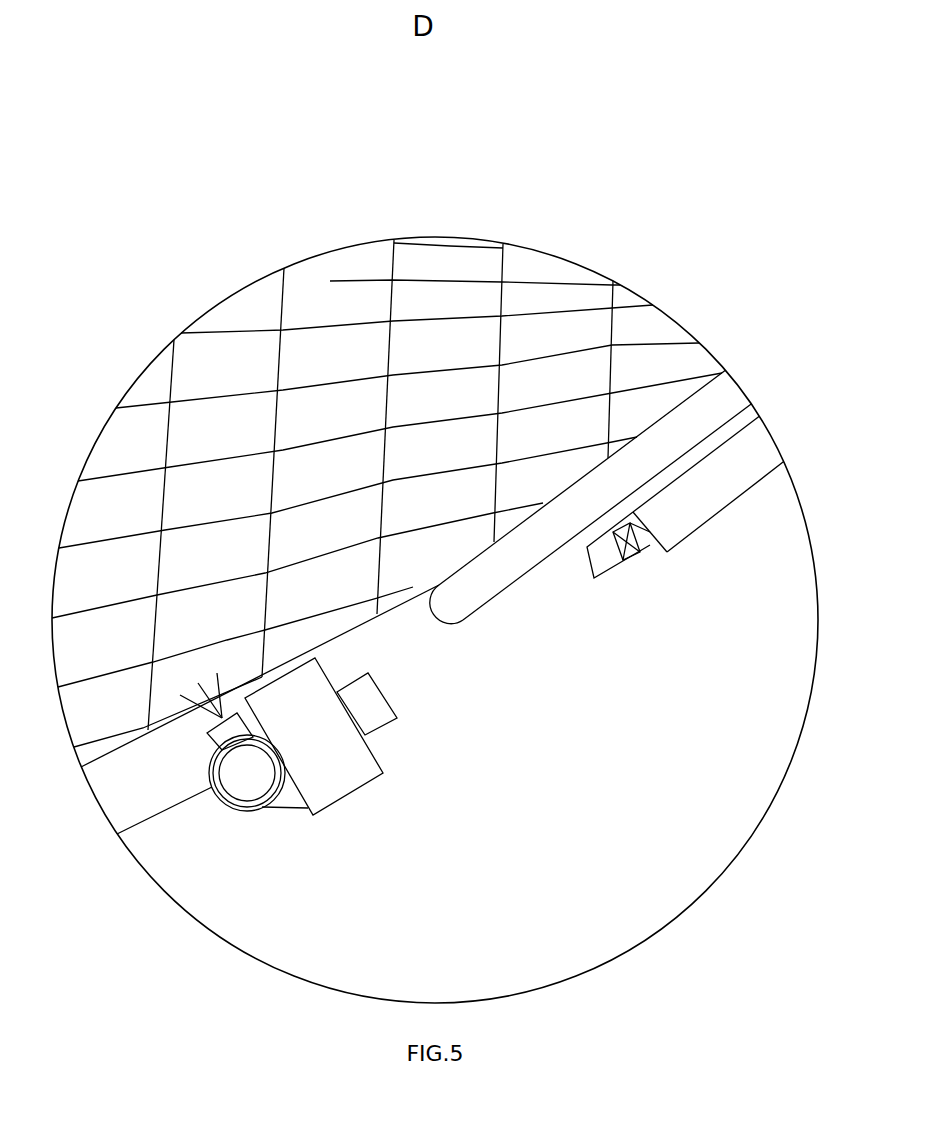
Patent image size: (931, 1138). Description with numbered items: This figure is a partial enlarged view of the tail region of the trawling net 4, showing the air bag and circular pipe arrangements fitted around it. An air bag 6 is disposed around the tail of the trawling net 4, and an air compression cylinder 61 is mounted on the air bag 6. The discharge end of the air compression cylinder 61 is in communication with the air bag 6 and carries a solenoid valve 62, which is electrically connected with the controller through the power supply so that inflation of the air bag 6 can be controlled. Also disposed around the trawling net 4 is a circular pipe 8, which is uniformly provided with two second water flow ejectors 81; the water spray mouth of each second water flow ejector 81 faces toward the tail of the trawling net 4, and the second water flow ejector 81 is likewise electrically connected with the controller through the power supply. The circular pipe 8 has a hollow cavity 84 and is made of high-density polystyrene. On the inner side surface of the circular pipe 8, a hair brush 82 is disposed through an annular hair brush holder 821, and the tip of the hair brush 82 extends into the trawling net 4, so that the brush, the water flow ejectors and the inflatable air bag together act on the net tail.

The trawling net 4 is at (253, 333).
The air bag 6 is at (497, 588).
The air compression cylinder 61 is at (707, 496).
The solenoid valve 62 is at (633, 563).
The circular pipe 8 is at (257, 782).
The second water flow ejector 81 is at (330, 766).
The hair brush 82 is at (186, 716).
The annular hair brush holder 821 is at (210, 786).
The hollow cavity 84 is at (238, 778).